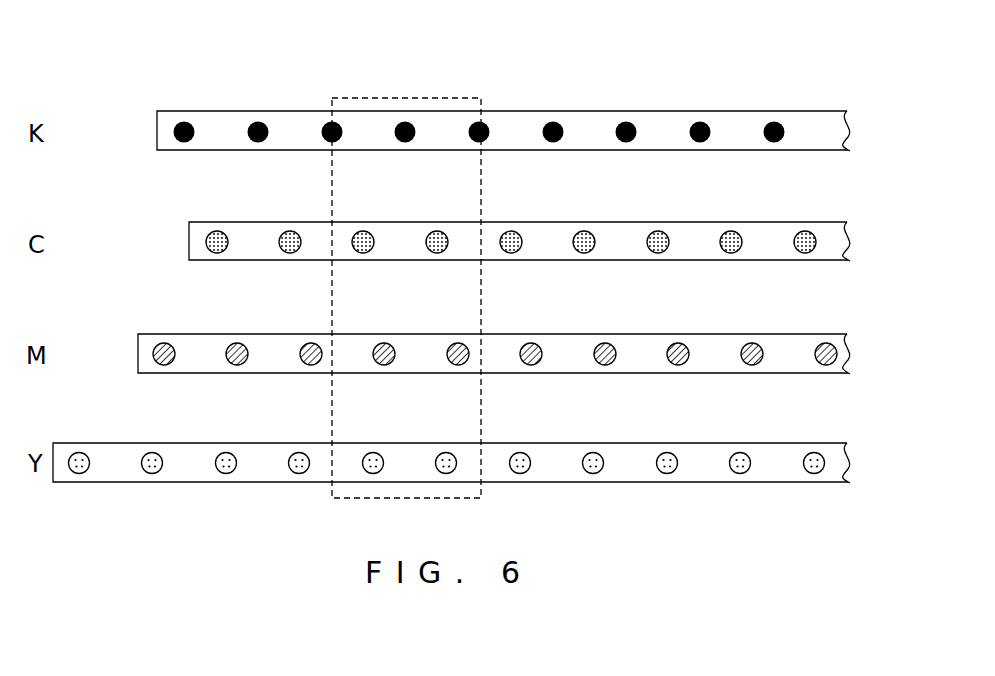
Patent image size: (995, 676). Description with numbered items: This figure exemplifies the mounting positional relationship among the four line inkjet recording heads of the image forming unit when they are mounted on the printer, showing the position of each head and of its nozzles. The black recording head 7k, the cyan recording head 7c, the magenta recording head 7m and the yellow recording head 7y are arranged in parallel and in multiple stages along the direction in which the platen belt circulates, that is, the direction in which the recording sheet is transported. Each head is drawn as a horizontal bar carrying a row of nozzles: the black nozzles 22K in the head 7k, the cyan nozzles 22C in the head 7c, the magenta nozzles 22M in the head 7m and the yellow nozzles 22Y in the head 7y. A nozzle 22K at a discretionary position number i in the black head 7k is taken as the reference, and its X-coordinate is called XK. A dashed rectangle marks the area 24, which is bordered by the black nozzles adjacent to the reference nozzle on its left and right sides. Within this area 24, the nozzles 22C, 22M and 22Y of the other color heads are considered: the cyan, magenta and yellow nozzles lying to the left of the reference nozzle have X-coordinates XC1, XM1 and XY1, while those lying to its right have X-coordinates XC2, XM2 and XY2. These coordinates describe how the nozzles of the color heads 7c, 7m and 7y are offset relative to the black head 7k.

The area 24 is at (392, 97).
The black recording head 7k is at (809, 112).
The cyan recording head 7c is at (808, 222).
The magenta recording head 7m is at (809, 334).
The yellow recording head 7y is at (809, 443).
The black nozzle 22K is at (548, 85).
The cyan nozzle 22C is at (497, 203).
The magenta nozzle 22M is at (518, 312).
The yellow nozzle 22Y is at (505, 425).